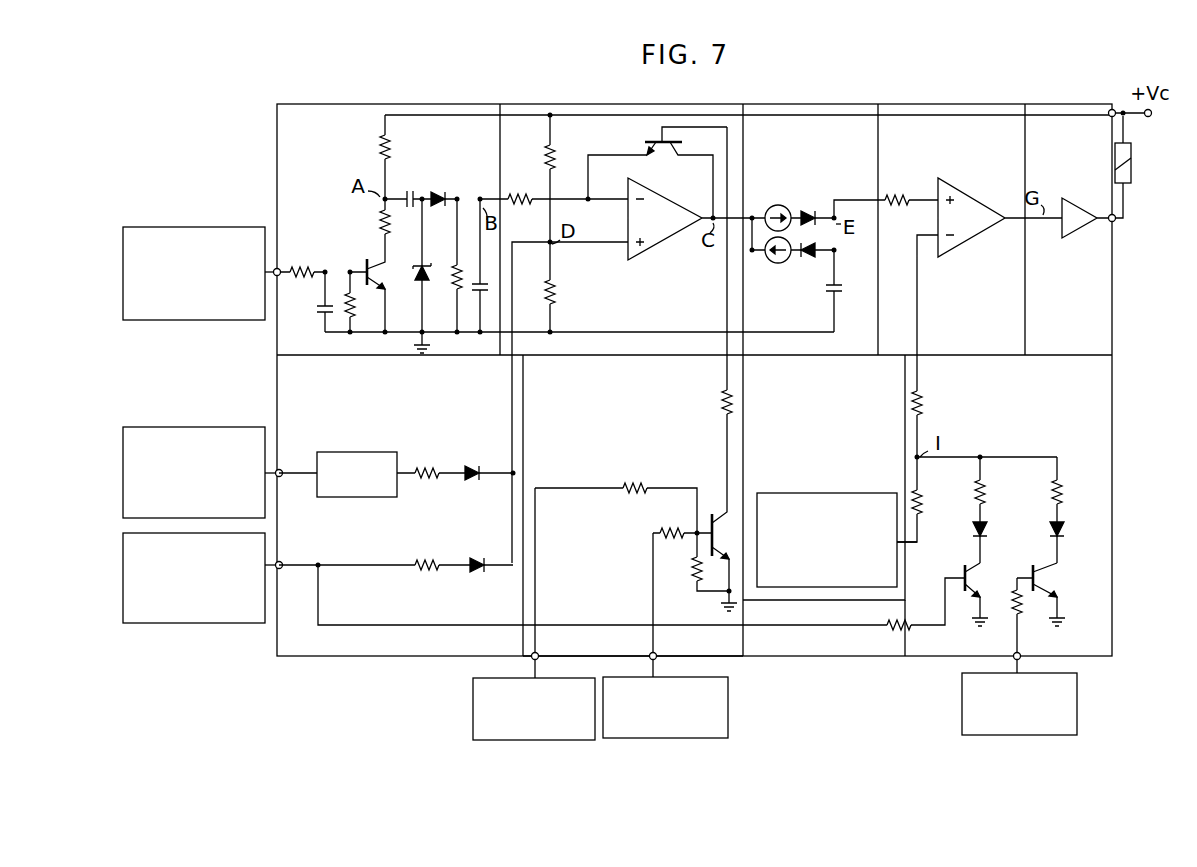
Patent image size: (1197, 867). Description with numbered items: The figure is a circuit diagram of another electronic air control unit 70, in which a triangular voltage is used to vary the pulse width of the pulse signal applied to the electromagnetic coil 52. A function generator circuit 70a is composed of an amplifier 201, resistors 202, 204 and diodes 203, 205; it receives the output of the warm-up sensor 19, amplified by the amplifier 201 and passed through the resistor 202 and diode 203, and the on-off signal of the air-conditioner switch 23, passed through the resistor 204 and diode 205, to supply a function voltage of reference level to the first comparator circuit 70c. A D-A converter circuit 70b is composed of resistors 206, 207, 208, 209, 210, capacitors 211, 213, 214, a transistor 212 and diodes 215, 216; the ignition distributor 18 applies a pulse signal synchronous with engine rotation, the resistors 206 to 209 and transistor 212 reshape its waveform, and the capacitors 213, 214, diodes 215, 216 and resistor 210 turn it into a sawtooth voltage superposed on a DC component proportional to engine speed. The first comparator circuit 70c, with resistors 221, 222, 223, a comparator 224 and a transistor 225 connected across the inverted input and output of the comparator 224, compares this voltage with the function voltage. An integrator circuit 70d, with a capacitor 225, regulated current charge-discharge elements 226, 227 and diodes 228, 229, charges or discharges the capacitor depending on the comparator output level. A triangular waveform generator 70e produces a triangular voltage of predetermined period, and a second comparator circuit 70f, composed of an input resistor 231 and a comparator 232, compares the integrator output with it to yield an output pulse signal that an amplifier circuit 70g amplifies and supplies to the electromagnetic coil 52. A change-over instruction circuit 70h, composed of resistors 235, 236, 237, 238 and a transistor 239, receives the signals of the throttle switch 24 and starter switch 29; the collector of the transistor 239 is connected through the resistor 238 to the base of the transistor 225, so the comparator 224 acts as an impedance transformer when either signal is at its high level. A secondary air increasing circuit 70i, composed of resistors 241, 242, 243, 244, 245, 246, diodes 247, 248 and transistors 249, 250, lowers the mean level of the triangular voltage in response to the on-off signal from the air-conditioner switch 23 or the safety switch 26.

The electronic air control unit 70 is at (535, 106).
The function generator circuit 70a is at (387, 657).
The D-A converter circuit 70b is at (358, 106).
The first comparator circuit 70c is at (639, 106).
The integrator circuit 70d is at (792, 106).
The triangular waveform generator 70e is at (837, 493).
The second comparator circuit 70f is at (942, 106).
The amplifier circuit 70g is at (1085, 230).
The change-over instruction circuit 70h is at (716, 658).
The secondary air increasing circuit 70i is at (930, 658).
The ignition distributor 18 is at (237, 228).
The warm-up sensor 19 is at (230, 427).
The air-conditioner switch 23 is at (240, 623).
The throttle switch 24 is at (728, 700).
The safety switch 26 is at (1077, 684).
The starter switch 29 is at (473, 719).
The electromagnetic coil 52 is at (1131, 164).
The amplifier 201 is at (343, 453).
The resistor 202 is at (431, 468).
The diode 203 is at (476, 466).
The resistor 204 is at (434, 559).
The diode 205 is at (476, 558).
The resistor 206 is at (309, 271).
The resistor 207 is at (357, 320).
The resistor 208 is at (378, 222).
The resistor 209 is at (378, 155).
The resistor 210 is at (452, 265).
The capacitor 211 is at (316, 312).
The transistor 212 is at (387, 280).
The capacitor 213 is at (416, 189).
The capacitor 214 is at (479, 312).
The diode 215 is at (418, 274).
The diode 216 is at (442, 193).
The resistor 221 is at (523, 190).
The resistor 222 is at (556, 290).
The resistor 223 is at (546, 156).
The comparator 224 is at (660, 248).
The transistor 225 is at (648, 143).
The regulated current charge-discharge element 226 is at (786, 204).
The regulated current charge-discharge element 227 is at (773, 263).
The diode 228 is at (816, 209).
The diode 229 is at (810, 266).
The input resistor 231 is at (900, 196).
The comparator 232 is at (977, 206).
The resistor 235 is at (675, 525).
The resistor 236 is at (636, 480).
The resistor 237 is at (691, 576).
The resistor 238 is at (723, 405).
The transistor 239 is at (715, 512).
The resistor 241 is at (894, 631).
The resistor 242 is at (1008, 590).
The resistor 243 is at (988, 498).
The resistor 244 is at (1066, 498).
The resistor 245 is at (922, 403).
The resistor 246 is at (925, 499).
The diode 247 is at (988, 529).
The diode 248 is at (1066, 532).
The transistor 249 is at (970, 563).
The transistor 250 is at (1042, 583).